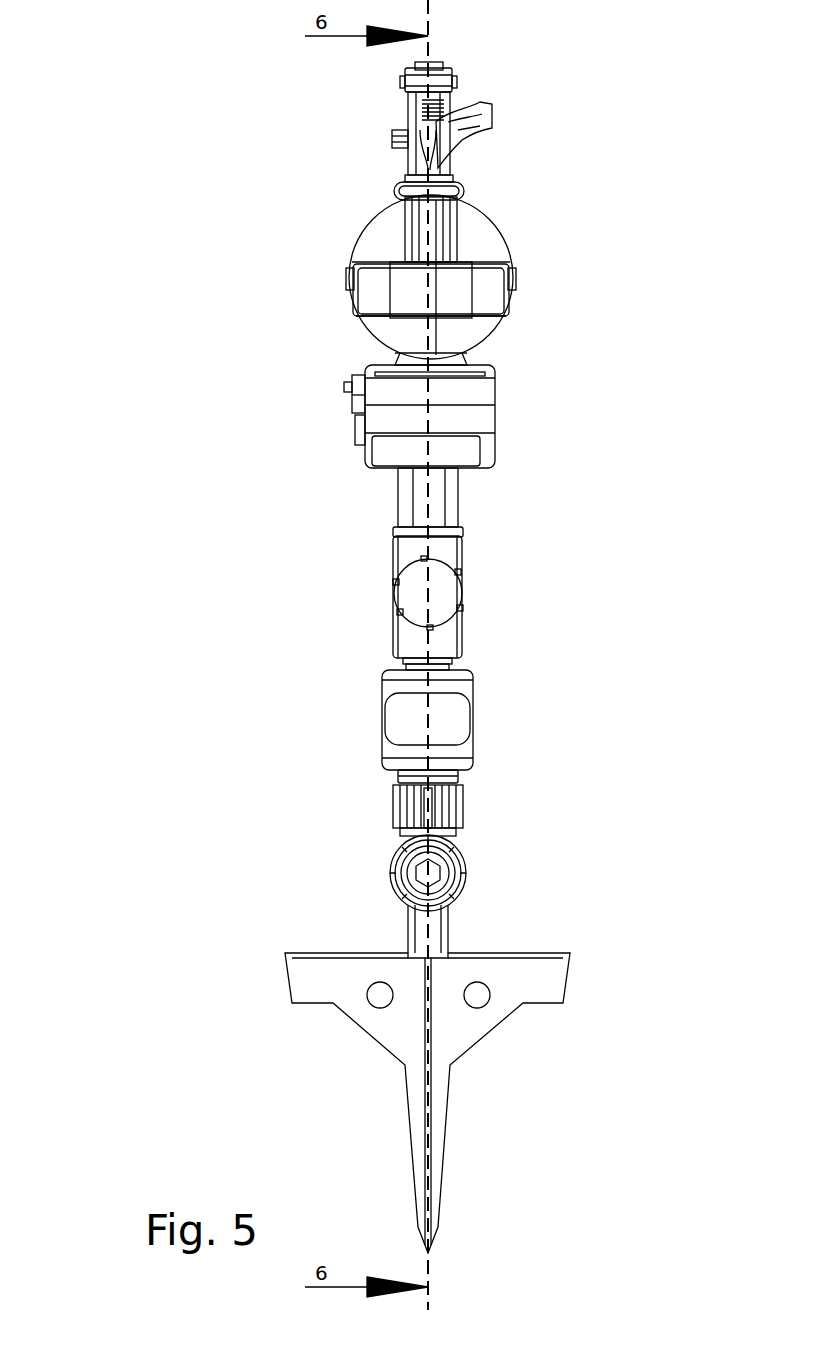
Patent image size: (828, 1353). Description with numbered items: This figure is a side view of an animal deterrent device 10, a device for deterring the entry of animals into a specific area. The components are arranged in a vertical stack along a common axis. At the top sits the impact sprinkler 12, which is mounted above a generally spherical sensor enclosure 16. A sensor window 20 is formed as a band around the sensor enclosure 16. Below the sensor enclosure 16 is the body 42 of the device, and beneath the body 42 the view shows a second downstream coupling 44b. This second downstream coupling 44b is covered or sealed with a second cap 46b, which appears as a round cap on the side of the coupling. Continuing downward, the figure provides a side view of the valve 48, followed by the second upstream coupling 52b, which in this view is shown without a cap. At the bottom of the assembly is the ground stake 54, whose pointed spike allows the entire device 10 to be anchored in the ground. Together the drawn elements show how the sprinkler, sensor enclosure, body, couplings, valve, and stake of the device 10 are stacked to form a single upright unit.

The animal deterrent device 10 is at (200, 236).
The impact sprinkler 12 is at (410, 124).
The sensor enclosure 16 is at (378, 228).
The sensor window 20 is at (413, 288).
The body 42 is at (383, 432).
The second downstream coupling 44b is at (355, 620).
The second cap 46b is at (452, 606).
The valve 48 is at (390, 718).
The second upstream coupling 52b is at (398, 863).
The ground stake 54 is at (310, 985).